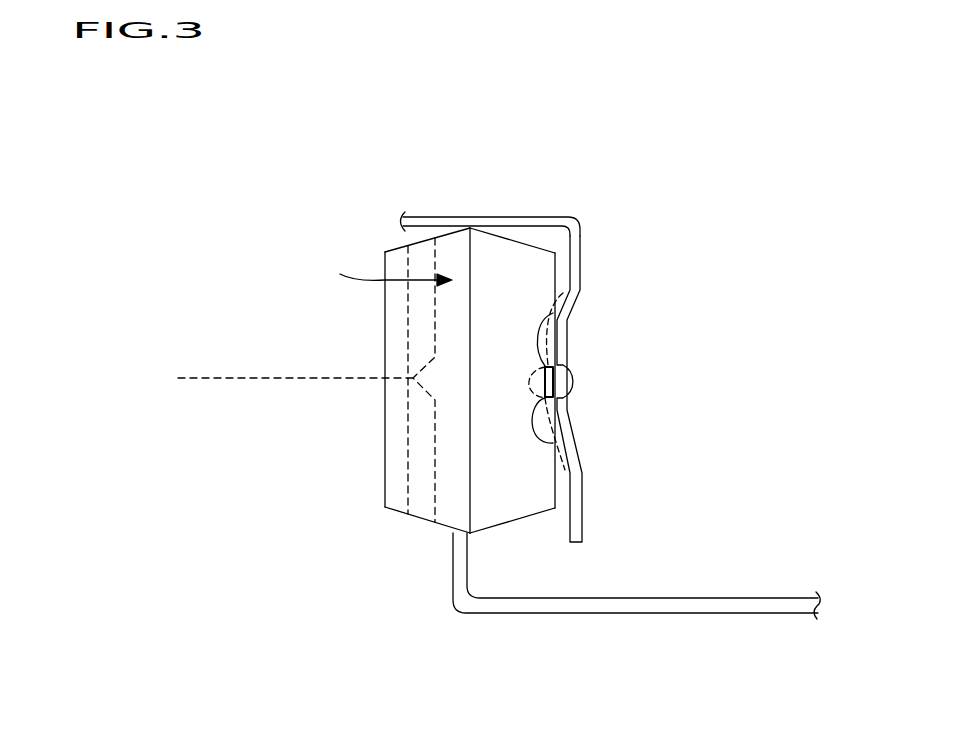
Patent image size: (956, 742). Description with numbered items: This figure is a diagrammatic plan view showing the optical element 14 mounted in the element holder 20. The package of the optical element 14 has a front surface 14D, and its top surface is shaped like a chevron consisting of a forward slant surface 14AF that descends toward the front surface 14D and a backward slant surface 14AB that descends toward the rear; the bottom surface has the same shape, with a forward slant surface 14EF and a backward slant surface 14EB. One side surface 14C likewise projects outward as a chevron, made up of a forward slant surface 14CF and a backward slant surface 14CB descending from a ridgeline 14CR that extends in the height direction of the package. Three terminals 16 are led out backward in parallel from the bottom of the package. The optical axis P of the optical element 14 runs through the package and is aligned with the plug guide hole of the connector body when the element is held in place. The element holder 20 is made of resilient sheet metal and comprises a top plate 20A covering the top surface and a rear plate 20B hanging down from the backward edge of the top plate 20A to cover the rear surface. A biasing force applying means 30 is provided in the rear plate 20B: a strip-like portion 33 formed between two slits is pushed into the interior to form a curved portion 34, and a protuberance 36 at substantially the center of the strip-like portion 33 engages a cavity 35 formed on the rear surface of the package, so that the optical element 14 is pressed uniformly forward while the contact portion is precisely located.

The optical element 14 is at (486, 400).
The forward slant surface 14AF is at (412, 243).
The backward slant surface 14AB is at (547, 250).
The side surface 14C is at (382, 380).
The forward slant surface 14CF is at (418, 303).
The ridgeline 14CR is at (468, 428).
The backward slant surface 14CB is at (528, 490).
The front surface 14D is at (383, 483).
The forward slant surface 14EF is at (418, 520).
The backward slant surface 14EB is at (498, 530).
The terminals 16 is at (751, 598).
The element holder 20 is at (520, 312).
The top plate 20A is at (512, 217).
The rear plate 20B is at (583, 282).
The biasing force applying means 30 is at (621, 375).
The strip-like portion 33 is at (570, 364).
The curved portion 34 is at (572, 330).
The cavities 35 is at (667, 447).
The protuberances 36 is at (572, 433).
The optical axis P is at (219, 376).